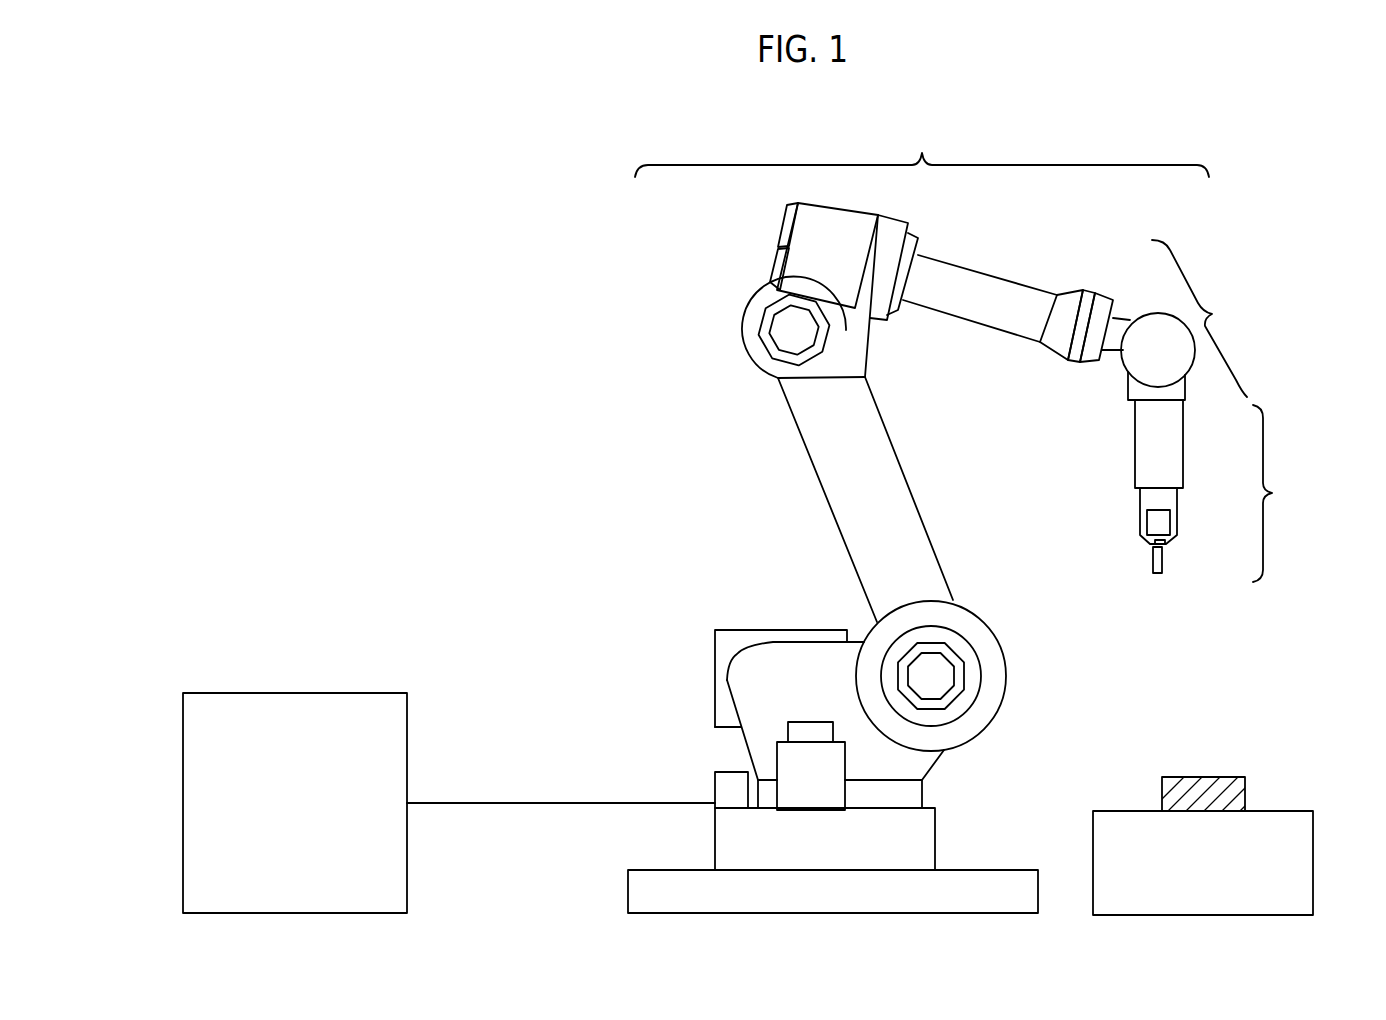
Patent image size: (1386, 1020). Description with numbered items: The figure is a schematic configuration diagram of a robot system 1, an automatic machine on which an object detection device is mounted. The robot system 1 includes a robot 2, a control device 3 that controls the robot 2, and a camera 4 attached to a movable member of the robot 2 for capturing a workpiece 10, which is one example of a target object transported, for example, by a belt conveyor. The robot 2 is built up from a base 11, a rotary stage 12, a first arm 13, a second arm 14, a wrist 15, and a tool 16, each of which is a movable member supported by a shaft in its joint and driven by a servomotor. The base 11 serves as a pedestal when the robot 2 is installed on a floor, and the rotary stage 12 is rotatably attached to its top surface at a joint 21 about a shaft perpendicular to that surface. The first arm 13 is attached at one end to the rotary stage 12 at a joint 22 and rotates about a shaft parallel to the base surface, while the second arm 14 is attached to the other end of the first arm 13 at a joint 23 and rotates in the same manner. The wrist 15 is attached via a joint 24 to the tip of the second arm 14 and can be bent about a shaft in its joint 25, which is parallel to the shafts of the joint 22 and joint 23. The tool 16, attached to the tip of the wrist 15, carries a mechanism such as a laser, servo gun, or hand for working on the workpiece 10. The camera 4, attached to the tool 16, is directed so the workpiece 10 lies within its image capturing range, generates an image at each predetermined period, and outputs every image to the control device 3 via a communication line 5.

The robot system 1 is at (450, 232).
The robot 2 is at (922, 148).
The control device 3 is at (407, 865).
The camera 4 is at (1172, 522).
The communication line 5 is at (513, 802).
The workpiece 10 is at (1237, 798).
The base 11 is at (937, 838).
The rotary stage 12 is at (938, 767).
The first arm 13 is at (912, 490).
The second arm 14 is at (985, 325).
The wrist 15 is at (1187, 320).
The tool 16 is at (1220, 491).
The joint 21 is at (923, 790).
The joint 22 is at (965, 675).
The joint 23 is at (760, 322).
The joint 24 is at (1107, 295).
The joint 25 is at (1157, 353).